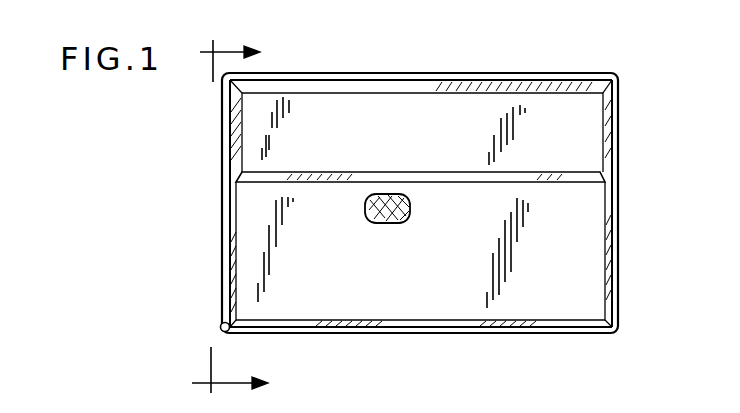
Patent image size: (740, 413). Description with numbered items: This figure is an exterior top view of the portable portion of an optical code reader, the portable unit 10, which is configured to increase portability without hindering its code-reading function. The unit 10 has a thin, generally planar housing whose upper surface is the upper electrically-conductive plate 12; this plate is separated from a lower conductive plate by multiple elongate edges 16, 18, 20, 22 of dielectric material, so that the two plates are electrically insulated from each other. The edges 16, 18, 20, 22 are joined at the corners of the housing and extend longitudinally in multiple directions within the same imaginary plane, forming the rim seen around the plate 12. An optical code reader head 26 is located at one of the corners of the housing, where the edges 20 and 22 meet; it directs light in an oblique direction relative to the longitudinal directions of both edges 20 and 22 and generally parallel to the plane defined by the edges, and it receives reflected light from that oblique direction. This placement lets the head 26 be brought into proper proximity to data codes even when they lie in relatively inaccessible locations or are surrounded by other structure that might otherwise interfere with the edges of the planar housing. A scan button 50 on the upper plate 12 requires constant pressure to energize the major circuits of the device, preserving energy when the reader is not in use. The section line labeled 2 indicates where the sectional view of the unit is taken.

The section line 2- 2 is at (229, 220).
The portable unit 10 is at (636, 96).
The upper electrically-conductive plate 12 is at (448, 137).
The elongate edge 16 is at (442, 75).
The elongate edge 18 is at (618, 218).
The elongate edge 20 is at (453, 334).
The elongate edge 22 is at (222, 246).
The optical code reader head 26 is at (230, 334).
The scan button 50 is at (410, 215).